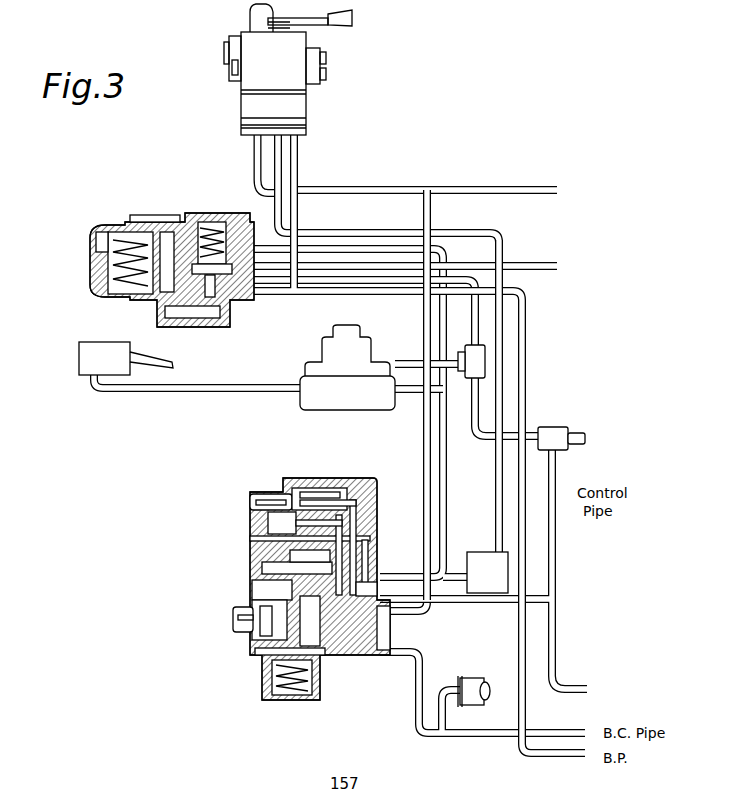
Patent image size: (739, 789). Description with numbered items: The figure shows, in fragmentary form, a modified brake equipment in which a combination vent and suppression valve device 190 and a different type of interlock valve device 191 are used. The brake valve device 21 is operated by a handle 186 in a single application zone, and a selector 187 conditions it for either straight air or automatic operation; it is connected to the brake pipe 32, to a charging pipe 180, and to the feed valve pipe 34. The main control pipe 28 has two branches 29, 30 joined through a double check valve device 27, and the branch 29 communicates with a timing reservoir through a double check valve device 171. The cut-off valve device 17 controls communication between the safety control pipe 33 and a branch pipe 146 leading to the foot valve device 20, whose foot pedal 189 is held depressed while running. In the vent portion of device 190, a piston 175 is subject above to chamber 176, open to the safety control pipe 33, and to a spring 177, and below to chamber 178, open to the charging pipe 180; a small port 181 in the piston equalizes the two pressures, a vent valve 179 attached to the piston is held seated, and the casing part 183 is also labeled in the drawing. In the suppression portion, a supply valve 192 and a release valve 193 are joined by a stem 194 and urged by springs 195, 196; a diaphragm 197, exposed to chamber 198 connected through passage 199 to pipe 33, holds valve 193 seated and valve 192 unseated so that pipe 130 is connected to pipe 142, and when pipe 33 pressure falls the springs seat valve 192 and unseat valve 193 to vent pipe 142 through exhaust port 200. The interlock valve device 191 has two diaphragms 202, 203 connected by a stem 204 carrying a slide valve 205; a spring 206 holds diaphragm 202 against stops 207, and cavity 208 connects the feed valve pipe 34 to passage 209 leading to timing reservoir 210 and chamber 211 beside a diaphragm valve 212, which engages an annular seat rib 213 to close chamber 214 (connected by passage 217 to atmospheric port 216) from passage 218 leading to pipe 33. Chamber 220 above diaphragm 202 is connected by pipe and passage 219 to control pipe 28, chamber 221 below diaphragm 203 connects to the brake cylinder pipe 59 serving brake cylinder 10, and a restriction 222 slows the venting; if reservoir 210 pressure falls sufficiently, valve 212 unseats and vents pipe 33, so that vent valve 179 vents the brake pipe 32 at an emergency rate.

The brake cylinder 10 is at (470, 680).
The cut-off valve device 17 is at (360, 352).
The foot valve device 20 is at (76, 361).
The brake valve device 21 is at (312, 106).
The double check valve device 27 is at (548, 430).
The main control pipe 28 is at (558, 641).
The branch of control pipe 29 is at (255, 152).
The branch of control pipe 30 is at (580, 433).
The brake pipe 32 is at (298, 153).
The safety control pipe 33 is at (425, 299).
The feed valve pipe 34 is at (509, 188).
The brake cylinder pipe 59 is at (418, 716).
The pipe 130 is at (557, 266).
The pipe 142 is at (480, 334).
The branch pipe 146 is at (236, 392).
The double check valve device 171 is at (482, 360).
The piston 175 is at (96, 260).
The chamber 176 is at (98, 232).
The spring 177 is at (108, 237).
The chamber 178 is at (112, 272).
The vent valve 179 is at (116, 292).
The charging pipe 180 is at (280, 174).
The small port 181 is at (135, 222).
The casing 183 is at (128, 304).
The handle 186 is at (344, 27).
The selector 187 is at (232, 68).
The foot pedal 189 is at (172, 366).
The combination vent and suppression valve device 190 is at (137, 210).
The interlock valve device 191 is at (246, 545).
The supply valve 192 is at (228, 262).
The release valve 193 is at (235, 316).
The stem 194 is at (170, 318).
The spring 195 is at (210, 248).
The spring 196 is at (190, 318).
The diaphragm 197 is at (240, 322).
The chamber 198 is at (215, 318).
The passage 199 is at (190, 296).
The exhaust port 200 is at (255, 305).
The diaphragm 202 is at (253, 588).
The diaphragm 203 is at (265, 656).
The stem 204 is at (262, 646).
The slide valve 205 is at (252, 600).
The spring 206 is at (282, 700).
The stops 207 is at (260, 568).
The cavity 208 is at (246, 630).
The passage 209 is at (350, 556).
The timing reservoir 210 is at (494, 552).
The chamber 211 is at (322, 492).
The diaphragm valve 212 is at (250, 497).
The annular seat rib 213 is at (305, 490).
The chamber 214 is at (255, 516).
The atmospheric port 216 is at (392, 630).
The passage 217 is at (252, 535).
The passage 218 is at (364, 520).
The pipe and passage 219 is at (375, 588).
The chamber 220 is at (355, 547).
The chamber 221 is at (252, 680).
The restriction 222 is at (344, 660).